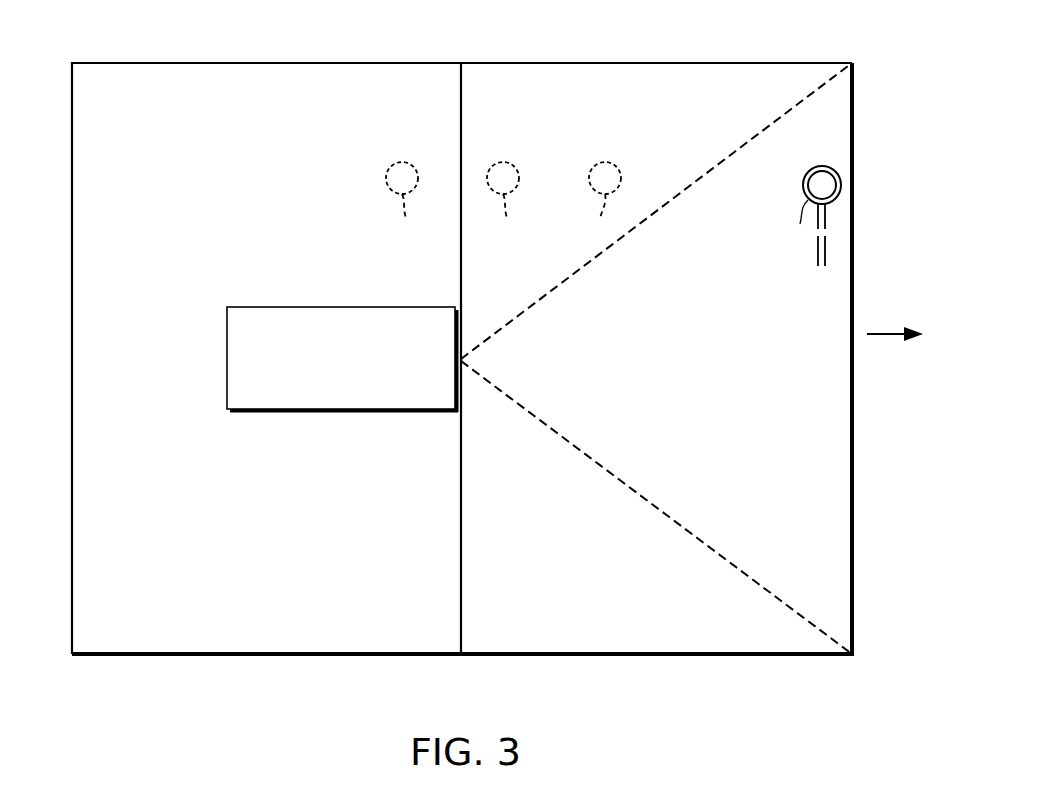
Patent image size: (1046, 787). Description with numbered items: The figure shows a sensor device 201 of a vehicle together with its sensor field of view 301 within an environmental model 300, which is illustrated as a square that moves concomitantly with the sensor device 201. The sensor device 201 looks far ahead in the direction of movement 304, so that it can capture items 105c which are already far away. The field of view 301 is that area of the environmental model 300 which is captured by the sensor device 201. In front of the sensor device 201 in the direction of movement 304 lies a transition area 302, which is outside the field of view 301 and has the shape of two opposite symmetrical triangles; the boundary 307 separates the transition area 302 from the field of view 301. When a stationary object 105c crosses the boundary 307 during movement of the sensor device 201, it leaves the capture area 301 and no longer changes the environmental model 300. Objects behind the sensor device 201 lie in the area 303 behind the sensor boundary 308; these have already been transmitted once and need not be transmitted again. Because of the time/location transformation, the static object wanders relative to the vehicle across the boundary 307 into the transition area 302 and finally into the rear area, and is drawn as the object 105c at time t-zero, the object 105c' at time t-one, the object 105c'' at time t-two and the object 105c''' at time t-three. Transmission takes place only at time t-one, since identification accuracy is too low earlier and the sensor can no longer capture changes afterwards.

The environmental model 300 is at (214, 62).
The sensor field of view 301 is at (836, 122).
The transition area 302 is at (708, 124).
The area behind the sensor boundary 303 is at (234, 538).
The direction of movement 304 is at (890, 337).
The boundary 307 is at (810, 90).
The sensor boundary 308 is at (461, 563).
The sensor device 201 is at (227, 359).
The object 105c is at (784, 216).
The object at time t1 105c' is at (600, 177).
The object at time t2 105c'' is at (499, 183).
The object at time t3 105c''' is at (399, 183).